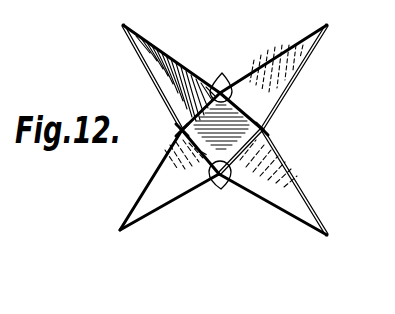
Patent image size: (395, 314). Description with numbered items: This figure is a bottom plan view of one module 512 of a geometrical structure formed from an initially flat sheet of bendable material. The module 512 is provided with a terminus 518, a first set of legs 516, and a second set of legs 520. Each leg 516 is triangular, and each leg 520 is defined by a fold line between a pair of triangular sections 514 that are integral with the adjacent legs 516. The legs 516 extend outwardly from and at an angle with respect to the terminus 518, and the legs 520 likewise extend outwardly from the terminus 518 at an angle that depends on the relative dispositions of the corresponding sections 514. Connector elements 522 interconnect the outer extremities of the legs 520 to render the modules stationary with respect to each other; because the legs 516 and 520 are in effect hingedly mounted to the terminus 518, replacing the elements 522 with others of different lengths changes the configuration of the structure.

The module 512 is at (284, 147).
The triangular section 514 is at (296, 45).
The leg 516 is at (292, 80).
The terminus 518 is at (180, 131).
The leg 520 is at (266, 127).
The connector element 522 is at (222, 73).